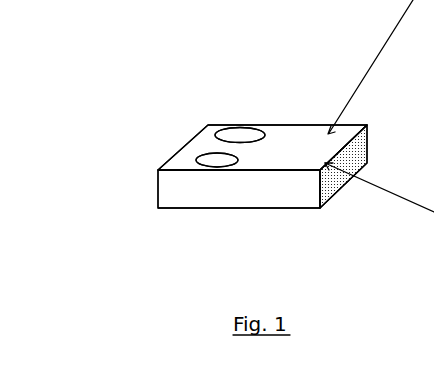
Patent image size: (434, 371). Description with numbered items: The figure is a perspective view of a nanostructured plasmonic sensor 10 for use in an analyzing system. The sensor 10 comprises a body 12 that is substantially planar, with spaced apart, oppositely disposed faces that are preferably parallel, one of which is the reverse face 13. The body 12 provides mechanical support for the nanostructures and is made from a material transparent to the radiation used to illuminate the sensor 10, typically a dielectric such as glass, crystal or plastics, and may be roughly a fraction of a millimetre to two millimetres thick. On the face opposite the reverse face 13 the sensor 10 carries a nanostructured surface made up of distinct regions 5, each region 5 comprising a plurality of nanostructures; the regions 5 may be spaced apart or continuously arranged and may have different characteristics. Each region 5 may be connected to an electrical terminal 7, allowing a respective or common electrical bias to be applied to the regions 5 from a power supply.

The nanostructured plasmonic sensor 10 is at (221, 121).
The region 5 is at (252, 130).
The aperture center C is at (210, 128).
The electrical terminal 7 is at (192, 135).
The body 12 is at (360, 150).
The reverse face 13 is at (283, 210).